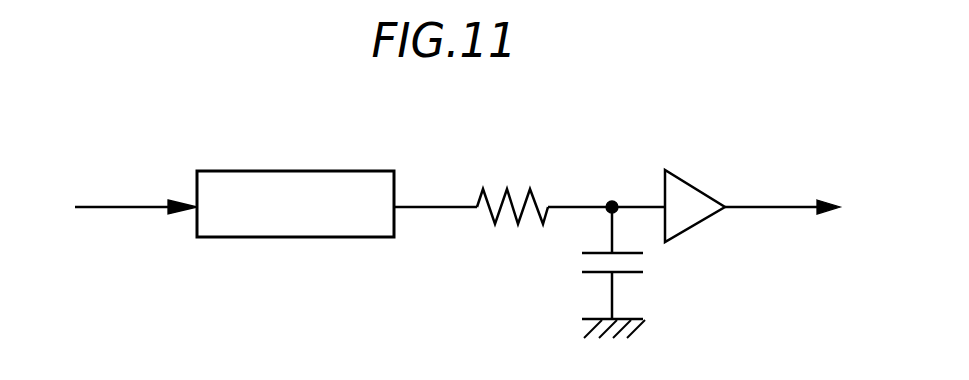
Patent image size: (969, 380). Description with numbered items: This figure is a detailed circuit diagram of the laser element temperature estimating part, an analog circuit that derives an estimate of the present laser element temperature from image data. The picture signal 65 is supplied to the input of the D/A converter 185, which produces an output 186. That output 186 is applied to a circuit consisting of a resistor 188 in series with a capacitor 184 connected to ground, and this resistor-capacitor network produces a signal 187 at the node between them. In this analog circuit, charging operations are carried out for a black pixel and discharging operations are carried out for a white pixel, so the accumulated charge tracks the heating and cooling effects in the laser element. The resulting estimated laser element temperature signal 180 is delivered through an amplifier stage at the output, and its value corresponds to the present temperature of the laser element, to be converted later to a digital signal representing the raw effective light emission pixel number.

The picture signal 65 is at (130, 205).
The D/A converter 185 is at (324, 170).
The output 186 is at (428, 206).
The resistor 188 is at (506, 185).
The signal 187 is at (632, 206).
The estimated laser element temperature signal 180 is at (770, 206).
The capacitor 184 is at (580, 262).